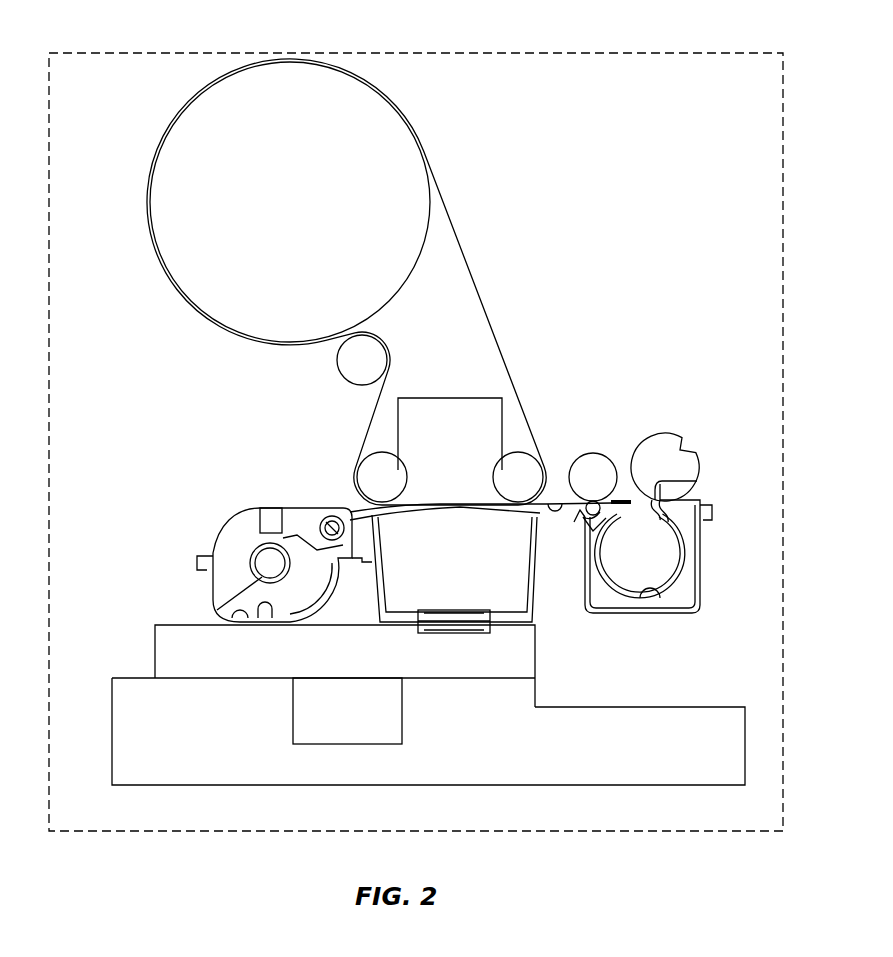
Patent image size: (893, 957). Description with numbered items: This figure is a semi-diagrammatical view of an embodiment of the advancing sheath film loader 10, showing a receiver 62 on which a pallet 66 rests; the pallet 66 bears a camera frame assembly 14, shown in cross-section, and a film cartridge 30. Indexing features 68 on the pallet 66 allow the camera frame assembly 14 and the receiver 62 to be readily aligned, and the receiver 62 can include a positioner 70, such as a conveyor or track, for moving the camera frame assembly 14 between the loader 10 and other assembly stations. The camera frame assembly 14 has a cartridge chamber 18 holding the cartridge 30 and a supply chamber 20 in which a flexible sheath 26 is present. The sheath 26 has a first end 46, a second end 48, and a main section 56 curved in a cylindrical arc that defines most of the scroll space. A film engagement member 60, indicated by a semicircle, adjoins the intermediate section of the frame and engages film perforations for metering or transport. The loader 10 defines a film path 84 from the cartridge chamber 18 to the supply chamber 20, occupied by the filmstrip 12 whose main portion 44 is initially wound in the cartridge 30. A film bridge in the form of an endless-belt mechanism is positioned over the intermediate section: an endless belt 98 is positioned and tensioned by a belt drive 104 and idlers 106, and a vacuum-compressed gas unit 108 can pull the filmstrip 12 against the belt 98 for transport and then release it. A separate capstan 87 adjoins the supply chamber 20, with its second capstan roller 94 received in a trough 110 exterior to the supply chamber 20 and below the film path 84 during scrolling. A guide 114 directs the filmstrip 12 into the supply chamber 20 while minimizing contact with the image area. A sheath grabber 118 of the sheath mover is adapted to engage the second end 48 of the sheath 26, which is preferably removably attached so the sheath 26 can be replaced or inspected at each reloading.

The advancing sheath film loader 10 is at (440, 52).
The belt drive 104 is at (412, 128).
The endless belt 98 is at (470, 262).
The idlers 106 is at (370, 350).
The vacuum-compressed gas unit 108 is at (465, 398).
The capstan 87 is at (481, 434).
The film engagement member 60 is at (557, 497).
The second capstan roller 94 is at (597, 503).
The guide 114 is at (622, 501).
The sheath grabber 118 is at (673, 435).
The second end 48 is at (693, 480).
The supply chamber 20 is at (702, 595).
The trough 110 is at (585, 518).
The first end 46 is at (613, 513).
The flexible sheath 26 is at (690, 623).
The main section 56 is at (644, 592).
The filmstrip 12 is at (364, 533).
The main portion 44 is at (364, 533).
The film path 84 is at (350, 510).
The film cartridge 30 is at (262, 508).
The cartridge chamber 18 is at (215, 555).
The camera frame assembly 14 is at (532, 610).
The indexing features 68 is at (478, 633).
The pallet 66 is at (155, 645).
The receiver 62 is at (475, 785).
The positioner 70 is at (348, 745).